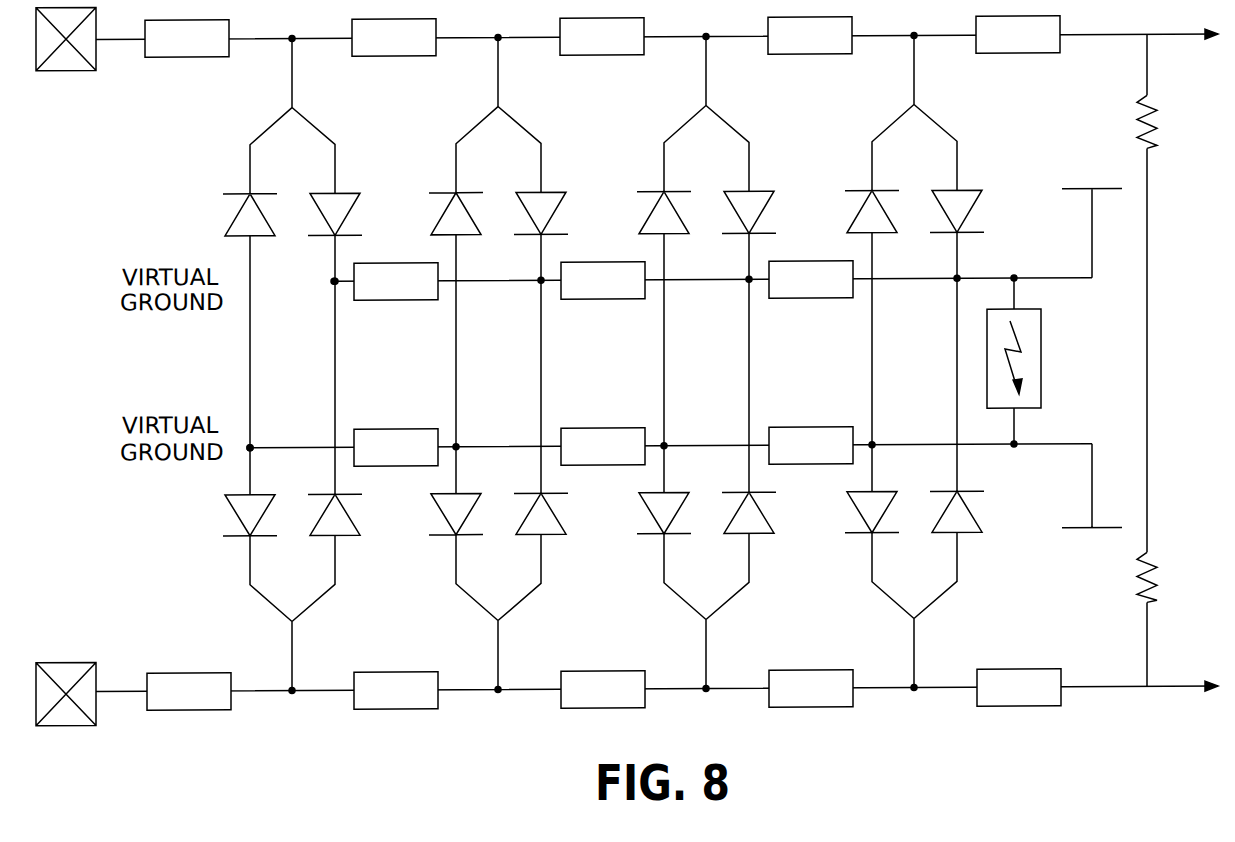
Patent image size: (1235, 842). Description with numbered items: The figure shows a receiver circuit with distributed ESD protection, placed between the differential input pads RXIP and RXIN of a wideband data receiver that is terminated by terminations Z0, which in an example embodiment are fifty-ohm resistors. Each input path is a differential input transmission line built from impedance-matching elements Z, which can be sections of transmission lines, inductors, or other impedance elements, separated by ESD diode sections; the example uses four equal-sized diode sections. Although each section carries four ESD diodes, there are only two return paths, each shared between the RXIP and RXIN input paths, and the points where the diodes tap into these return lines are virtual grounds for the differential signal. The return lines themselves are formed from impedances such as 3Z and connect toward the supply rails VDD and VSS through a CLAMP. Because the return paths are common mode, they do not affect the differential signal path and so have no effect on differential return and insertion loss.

The differential input pad RXIP is at (66, 58).
The differential input pad RXIN is at (67, 711).
The impedance-matching element Z is at (706, 362).
The virtual ground impedance element 3Z is at (396, 364).
The termination Z0 is at (1166, 349).
The positive supply rail VDD is at (1092, 215).
The negative supply rail VSS is at (1092, 503).
The ESD clamp CLAMP is at (1059, 360).